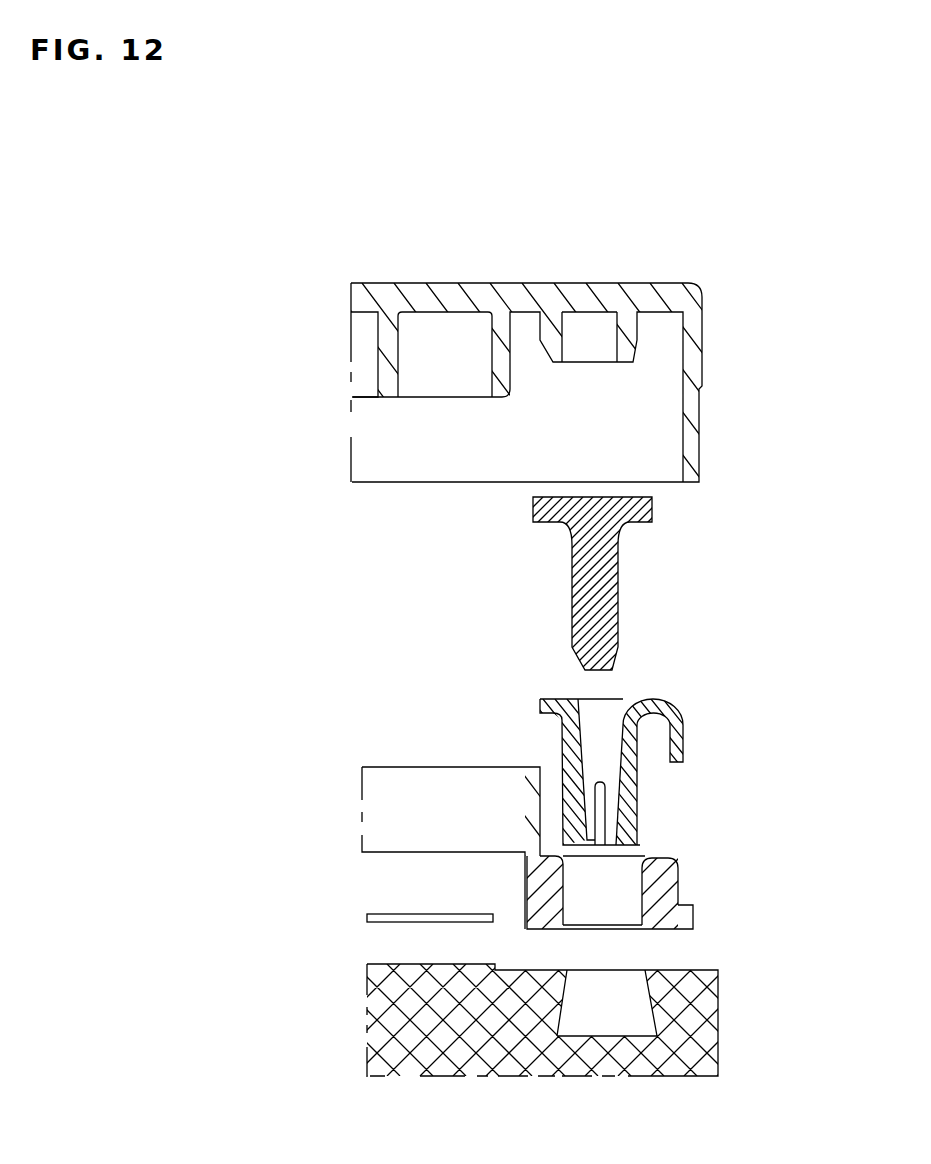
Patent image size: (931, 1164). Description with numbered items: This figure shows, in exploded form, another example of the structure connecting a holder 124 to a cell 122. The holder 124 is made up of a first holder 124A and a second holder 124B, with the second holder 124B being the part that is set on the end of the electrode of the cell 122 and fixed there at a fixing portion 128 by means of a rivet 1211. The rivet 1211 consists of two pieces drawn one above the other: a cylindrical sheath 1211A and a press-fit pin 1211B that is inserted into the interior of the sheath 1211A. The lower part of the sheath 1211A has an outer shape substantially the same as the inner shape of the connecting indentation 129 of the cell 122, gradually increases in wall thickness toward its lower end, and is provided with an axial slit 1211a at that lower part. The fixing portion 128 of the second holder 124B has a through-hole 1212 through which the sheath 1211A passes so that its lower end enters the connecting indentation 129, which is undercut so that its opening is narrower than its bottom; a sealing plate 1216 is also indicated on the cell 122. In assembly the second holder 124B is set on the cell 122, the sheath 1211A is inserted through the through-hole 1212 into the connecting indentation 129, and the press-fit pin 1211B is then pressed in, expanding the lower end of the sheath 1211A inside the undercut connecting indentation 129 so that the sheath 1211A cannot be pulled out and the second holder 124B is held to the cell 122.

The holder 124 is at (260, 640).
The first holder 124A is at (352, 298).
The second holder 124B is at (400, 790).
The rivet 1211 is at (778, 618).
The press-fit pin 1211B is at (598, 570).
The sheath 1211A is at (625, 753).
The axial slit 1211a is at (589, 781).
The through-hole 1212 is at (627, 865).
The fixing portion 128 is at (657, 911).
The sealing plate 1216 is at (695, 995).
The cell 122 is at (744, 1023).
The connecting indentation 129 is at (626, 1049).